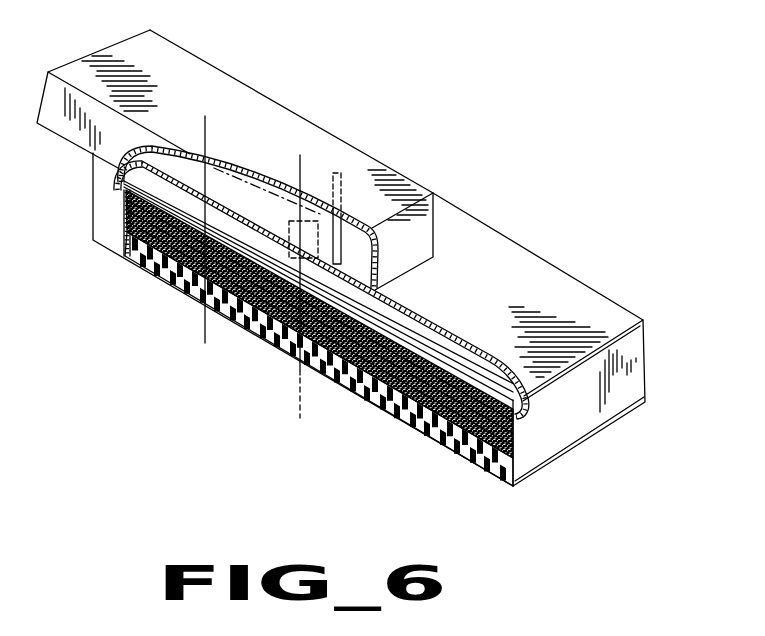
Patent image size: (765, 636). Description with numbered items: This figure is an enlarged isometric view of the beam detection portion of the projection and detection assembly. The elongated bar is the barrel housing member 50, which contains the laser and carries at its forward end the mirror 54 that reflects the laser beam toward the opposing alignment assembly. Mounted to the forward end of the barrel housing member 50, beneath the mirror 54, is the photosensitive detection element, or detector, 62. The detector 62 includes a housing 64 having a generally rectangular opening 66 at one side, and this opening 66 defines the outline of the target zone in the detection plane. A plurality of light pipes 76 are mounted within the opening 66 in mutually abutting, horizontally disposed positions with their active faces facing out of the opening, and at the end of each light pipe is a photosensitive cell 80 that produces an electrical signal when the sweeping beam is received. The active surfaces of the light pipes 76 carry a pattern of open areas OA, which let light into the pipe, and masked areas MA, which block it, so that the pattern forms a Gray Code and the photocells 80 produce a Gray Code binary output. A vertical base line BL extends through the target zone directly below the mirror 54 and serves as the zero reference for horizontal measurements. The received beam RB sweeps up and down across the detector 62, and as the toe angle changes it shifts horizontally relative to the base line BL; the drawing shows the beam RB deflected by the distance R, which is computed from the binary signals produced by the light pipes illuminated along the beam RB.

The barrel housing member 50 is at (226, 76).
The mirror 54 is at (344, 176).
The photosensitive detection element 62 is at (598, 268).
The housing 64 is at (612, 407).
The rectangular opening 66 is at (503, 448).
The light pipes 76 is at (409, 368).
The photosensitive cell 80 is at (120, 186).
The deflection distance R is at (299, 176).
The right beam RB is at (203, 319).
The open areas OA is at (233, 301).
The base line BL is at (299, 373).
The masked areas MA is at (403, 411).